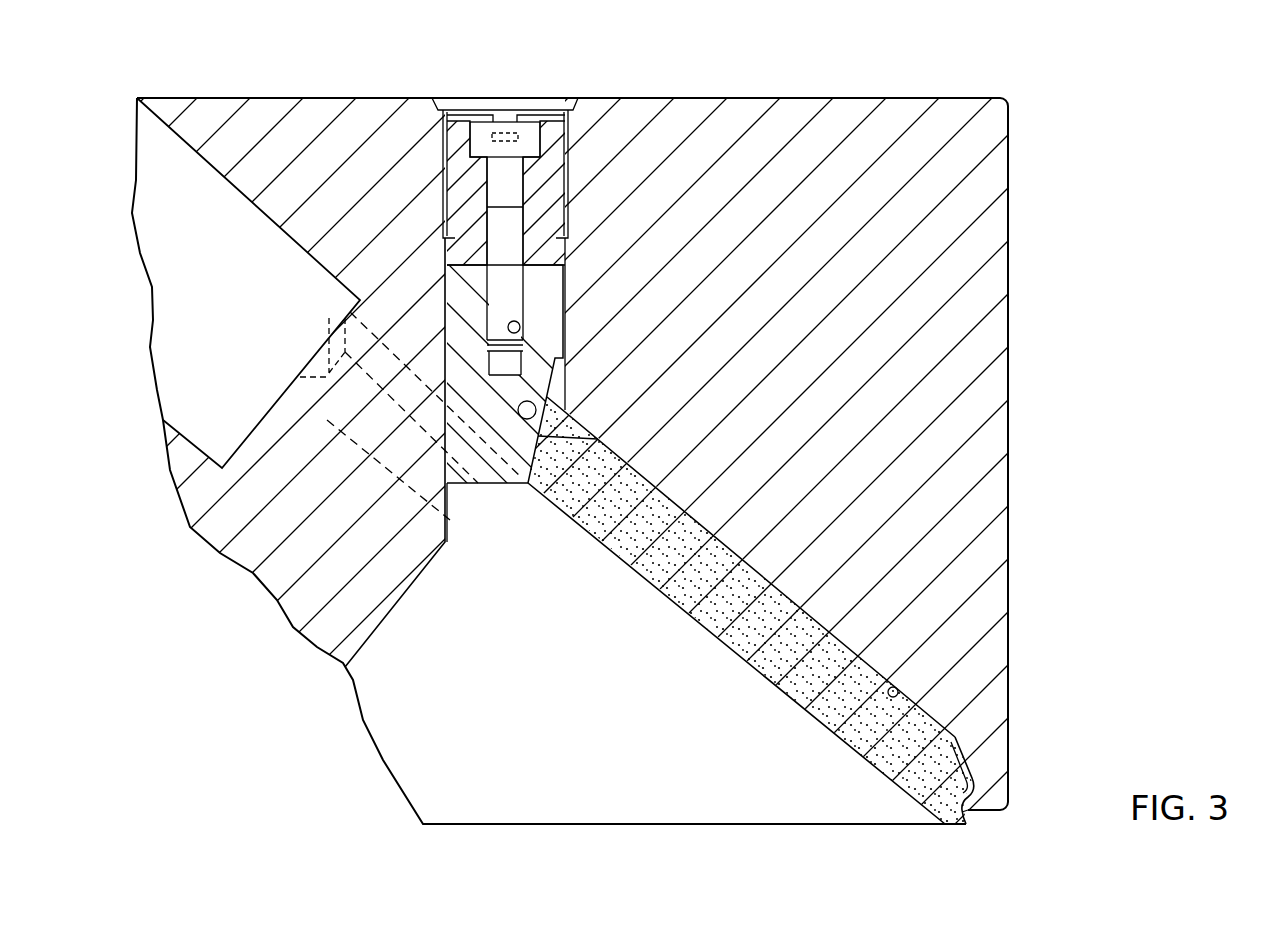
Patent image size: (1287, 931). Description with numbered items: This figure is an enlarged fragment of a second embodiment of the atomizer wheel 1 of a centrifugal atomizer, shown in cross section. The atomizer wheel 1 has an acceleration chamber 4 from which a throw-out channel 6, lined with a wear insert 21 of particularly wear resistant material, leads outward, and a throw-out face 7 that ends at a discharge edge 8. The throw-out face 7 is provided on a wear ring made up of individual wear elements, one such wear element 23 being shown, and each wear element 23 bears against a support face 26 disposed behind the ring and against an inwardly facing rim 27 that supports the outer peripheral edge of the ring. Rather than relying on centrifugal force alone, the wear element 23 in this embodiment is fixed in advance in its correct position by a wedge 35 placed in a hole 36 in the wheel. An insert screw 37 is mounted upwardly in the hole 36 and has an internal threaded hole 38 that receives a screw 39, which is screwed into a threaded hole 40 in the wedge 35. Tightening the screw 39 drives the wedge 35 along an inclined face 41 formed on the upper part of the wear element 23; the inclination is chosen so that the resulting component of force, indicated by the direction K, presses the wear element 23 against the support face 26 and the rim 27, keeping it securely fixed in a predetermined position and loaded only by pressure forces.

The atomizer wheel 1 is at (930, 97).
The acceleration chamber 4 is at (182, 385).
The throw-out channel 6 is at (329, 320).
The wear insert 21 is at (320, 410).
The wedge 35 is at (513, 487).
The hole 36 is at (452, 520).
The insert screw 37 is at (520, 232).
The internal threaded hole 38 is at (550, 240).
The screw 39 is at (508, 300).
The threaded hole 40 is at (520, 327).
The inclined face 41 is at (535, 400).
The direction K is at (598, 437).
The throw-out face 7 is at (668, 583).
The wear element 23 is at (798, 660).
The support face 26 is at (900, 692).
The inwardly facing rim 27 is at (988, 812).
The discharge edge 8 is at (963, 825).